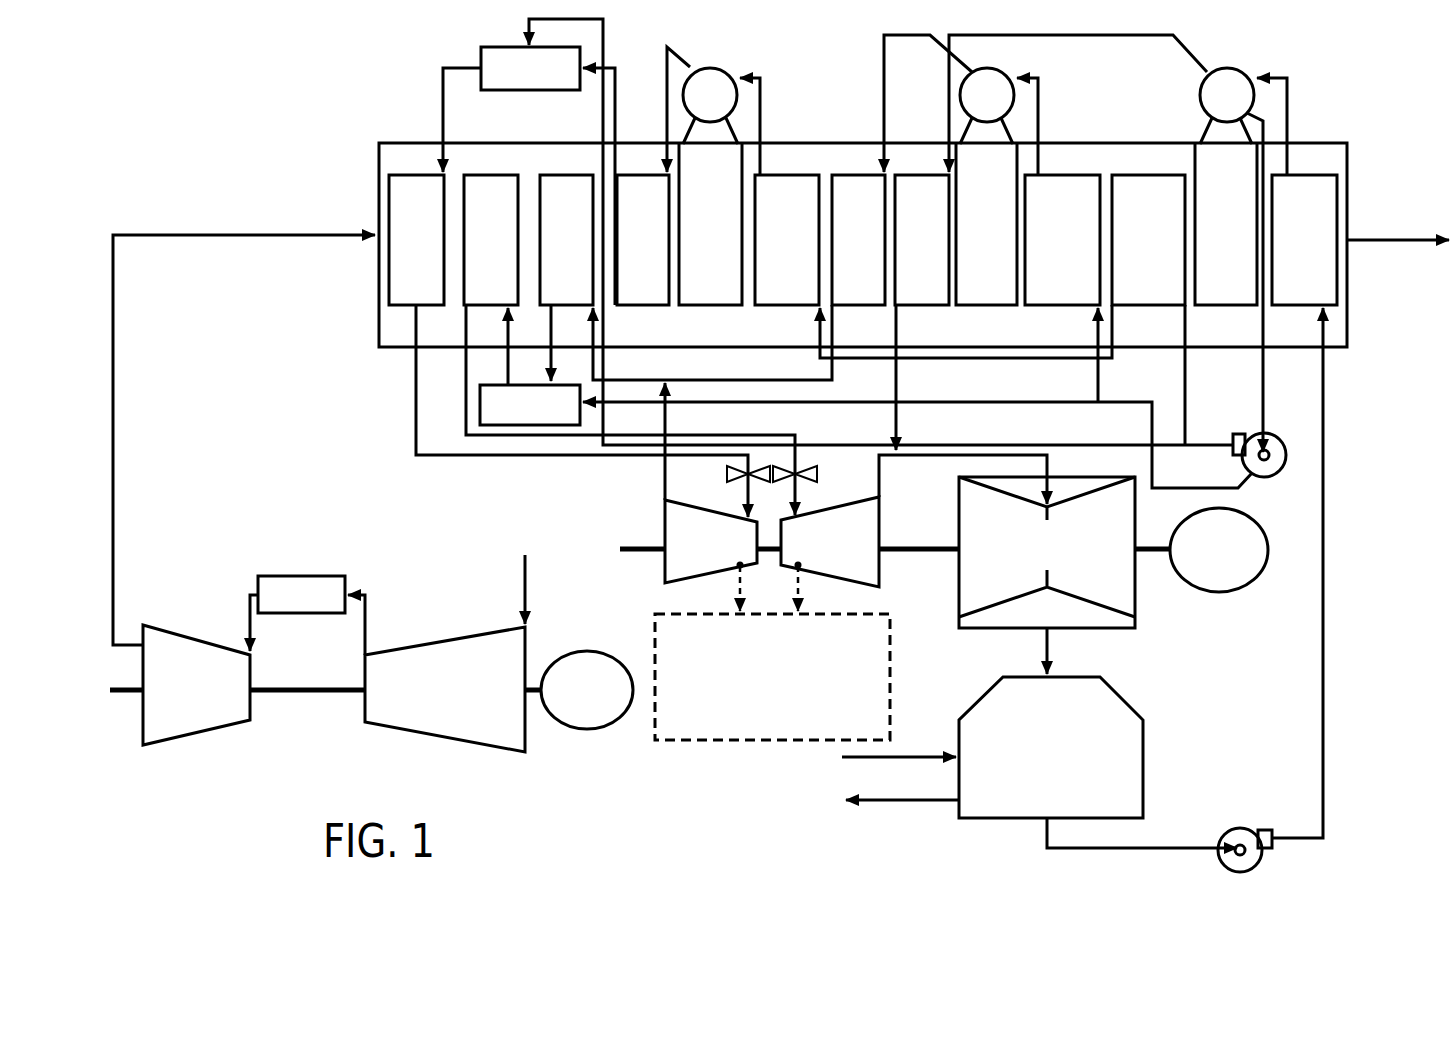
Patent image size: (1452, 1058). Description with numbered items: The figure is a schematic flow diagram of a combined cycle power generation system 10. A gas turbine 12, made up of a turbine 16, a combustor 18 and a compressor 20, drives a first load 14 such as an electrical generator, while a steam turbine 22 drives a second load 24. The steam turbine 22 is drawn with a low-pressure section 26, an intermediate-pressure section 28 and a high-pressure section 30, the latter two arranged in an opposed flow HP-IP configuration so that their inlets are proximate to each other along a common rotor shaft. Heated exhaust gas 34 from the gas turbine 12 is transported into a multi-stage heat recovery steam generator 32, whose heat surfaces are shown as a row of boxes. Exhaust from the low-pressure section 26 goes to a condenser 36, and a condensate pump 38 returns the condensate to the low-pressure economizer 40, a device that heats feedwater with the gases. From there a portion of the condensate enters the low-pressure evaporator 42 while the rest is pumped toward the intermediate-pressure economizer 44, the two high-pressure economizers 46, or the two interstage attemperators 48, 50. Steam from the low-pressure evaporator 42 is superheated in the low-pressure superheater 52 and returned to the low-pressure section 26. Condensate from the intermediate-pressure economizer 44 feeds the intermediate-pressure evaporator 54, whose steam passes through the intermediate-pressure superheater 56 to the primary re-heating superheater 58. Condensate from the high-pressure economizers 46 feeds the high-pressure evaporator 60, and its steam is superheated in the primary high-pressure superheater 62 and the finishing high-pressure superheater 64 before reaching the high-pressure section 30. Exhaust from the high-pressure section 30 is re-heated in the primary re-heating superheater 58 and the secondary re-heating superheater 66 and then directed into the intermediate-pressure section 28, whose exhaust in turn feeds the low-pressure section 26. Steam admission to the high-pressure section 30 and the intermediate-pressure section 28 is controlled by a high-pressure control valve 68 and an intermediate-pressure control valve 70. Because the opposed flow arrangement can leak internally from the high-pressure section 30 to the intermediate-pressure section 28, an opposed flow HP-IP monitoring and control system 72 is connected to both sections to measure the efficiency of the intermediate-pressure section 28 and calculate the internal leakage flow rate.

The combined cycle power generation system 10 is at (250, 67).
The gas turbine 12 is at (365, 524).
The first load 14 is at (587, 723).
The turbine 16 is at (196, 657).
The combustor 18 is at (307, 578).
The compressor 20 is at (445, 652).
The steam turbine 22 is at (961, 590).
The second load 24 is at (1219, 578).
The low-pressure section 26 is at (1016, 575).
The intermediate-pressure section 28 is at (914, 521).
The high-pressure section 30 is at (678, 483).
The heat recovery steam generator 32 is at (890, 266).
The heated exhaust gas 34 is at (244, 440).
The condenser 36 is at (1020, 747).
The condensate pump 38 is at (1185, 590).
The low-pressure economizer 40 is at (1325, 198).
The low-pressure evaporator 42 is at (934, 261).
The intermediate-pressure economizer 44 is at (1058, 240).
The high-pressure economizers 46 is at (962, 261).
The interstage attemperator 48 is at (830, 230).
The interstage attemperator 50 is at (530, 403).
The low-pressure superheater 52 is at (929, 312).
The intermediate-pressure evaporator 54 is at (955, 187).
The intermediate-pressure superheater 56 is at (739, 261).
The primary re-heating superheater 58 is at (557, 262).
The high-pressure evaporator 60 is at (704, 193).
The primary high-pressure superheater 62 is at (628, 203).
The finishing high-pressure superheater 64 is at (540, 346).
The secondary re-heating superheater 66 is at (611, 345).
The high-pressure control valve 68 is at (721, 482).
The intermediate-pressure control valve 70 is at (820, 482).
The opposed flow HP-IP monitoring and control system 72 is at (772, 686).